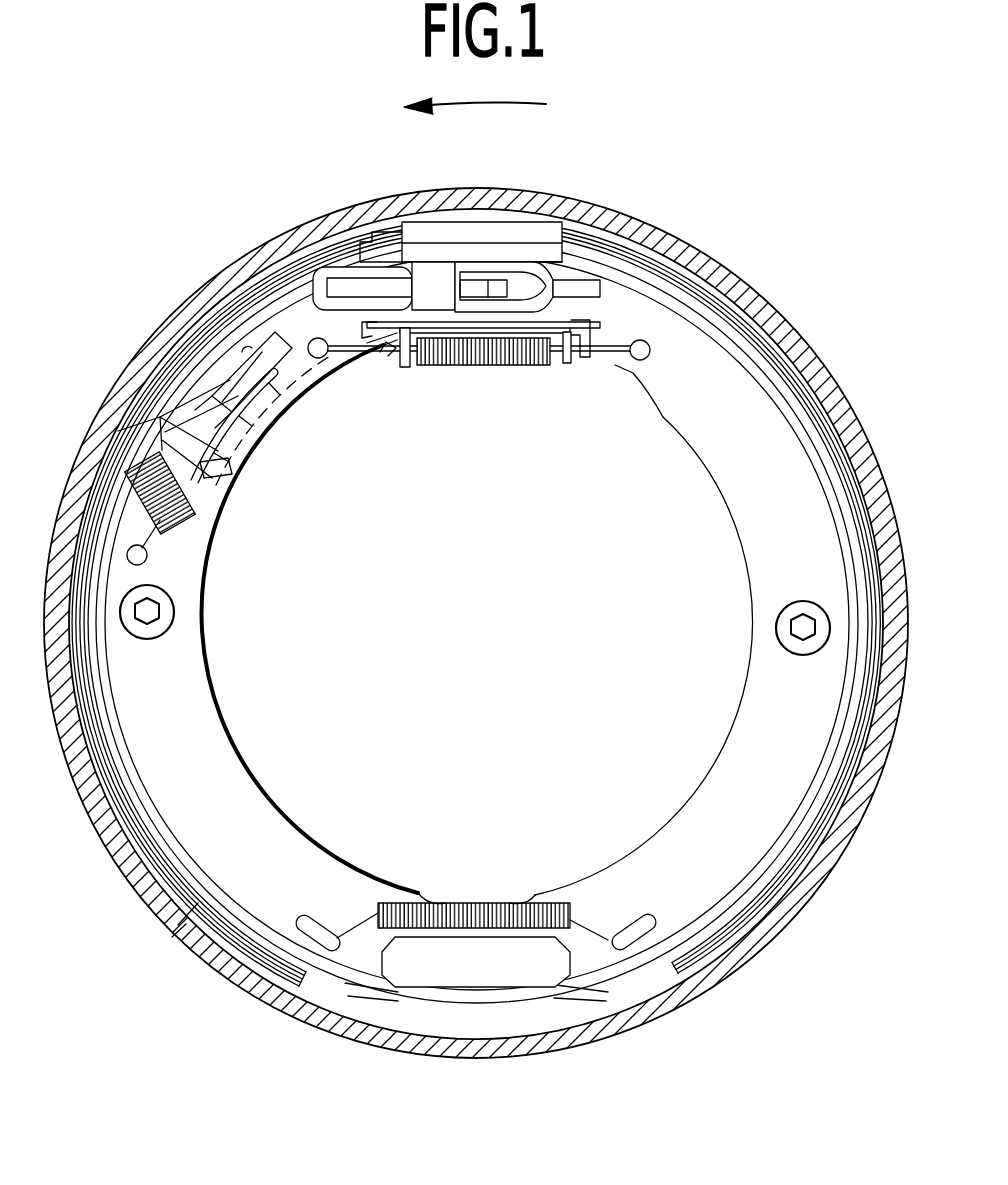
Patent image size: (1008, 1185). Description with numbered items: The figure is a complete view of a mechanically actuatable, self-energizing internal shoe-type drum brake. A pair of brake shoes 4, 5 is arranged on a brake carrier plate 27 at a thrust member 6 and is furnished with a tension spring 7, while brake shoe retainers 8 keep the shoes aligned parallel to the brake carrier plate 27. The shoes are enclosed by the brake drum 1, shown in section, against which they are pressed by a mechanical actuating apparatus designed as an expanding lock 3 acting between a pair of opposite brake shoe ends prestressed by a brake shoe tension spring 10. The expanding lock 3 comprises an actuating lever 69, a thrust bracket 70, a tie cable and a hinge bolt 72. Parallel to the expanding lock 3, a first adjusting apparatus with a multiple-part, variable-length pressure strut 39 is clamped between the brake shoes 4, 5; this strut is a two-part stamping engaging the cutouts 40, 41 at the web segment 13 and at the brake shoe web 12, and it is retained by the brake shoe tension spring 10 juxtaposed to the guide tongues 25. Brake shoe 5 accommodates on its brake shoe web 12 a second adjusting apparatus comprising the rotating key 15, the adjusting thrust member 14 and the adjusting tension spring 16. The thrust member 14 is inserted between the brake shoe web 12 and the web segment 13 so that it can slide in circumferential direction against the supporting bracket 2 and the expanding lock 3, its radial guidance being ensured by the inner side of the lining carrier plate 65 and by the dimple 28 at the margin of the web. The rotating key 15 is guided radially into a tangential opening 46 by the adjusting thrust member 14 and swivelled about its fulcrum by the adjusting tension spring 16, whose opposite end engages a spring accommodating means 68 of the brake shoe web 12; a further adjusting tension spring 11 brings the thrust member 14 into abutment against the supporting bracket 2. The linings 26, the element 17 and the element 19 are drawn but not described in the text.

The brake drum 1 is at (228, 273).
The supporting bracket 2 is at (441, 228).
The expanding lock 3 is at (420, 262).
The brake shoe 4 is at (670, 832).
The brake shoe 5 is at (252, 808).
The thrust member 6 is at (490, 978).
The tension spring 7 is at (497, 905).
The brake shoe retainers 8 is at (172, 630).
The brake shoe tension spring 10 is at (430, 368).
The adjusting tension spring 11 is at (520, 368).
The brake shoe web 12 is at (210, 512).
The web segment 13 is at (222, 466).
The adjusting thrust member 14 is at (380, 236).
The rotating key 15 is at (230, 380).
The adjusting tension spring 16 is at (213, 540).
The strut plate 17 is at (606, 327).
The bracket 19 is at (405, 370).
The guide tongues 25 is at (565, 366).
The brake lining 26 is at (300, 248).
The brake carrier plate 27 is at (362, 1030).
The dimple 28 is at (305, 408).
The pressure strut 39 is at (596, 320).
The cutout 40 is at (582, 359).
The cutout 41 is at (385, 354).
The opening 46 is at (205, 396).
The lining carrier plate 65 is at (185, 922).
The spring accommodating means 68 is at (327, 360).
The actuating lever 69 is at (486, 276).
The thrust bracket 70 is at (545, 255).
The hinge bolt 72 is at (345, 240).